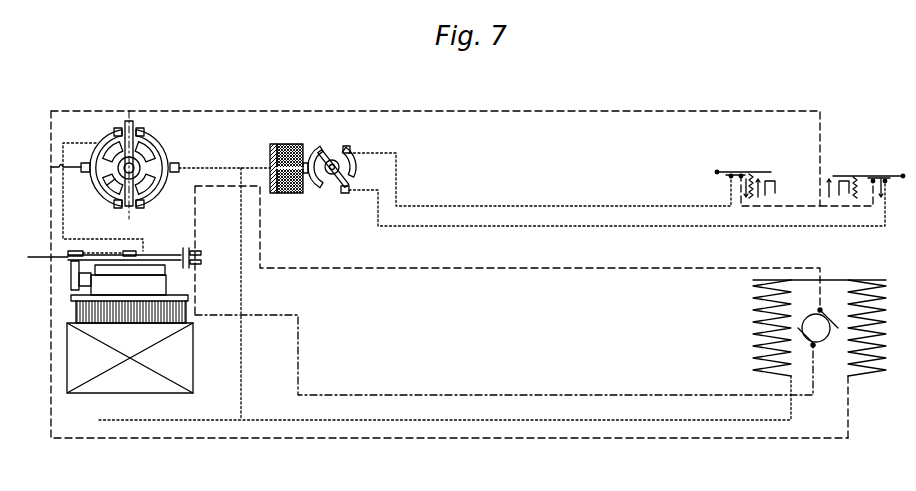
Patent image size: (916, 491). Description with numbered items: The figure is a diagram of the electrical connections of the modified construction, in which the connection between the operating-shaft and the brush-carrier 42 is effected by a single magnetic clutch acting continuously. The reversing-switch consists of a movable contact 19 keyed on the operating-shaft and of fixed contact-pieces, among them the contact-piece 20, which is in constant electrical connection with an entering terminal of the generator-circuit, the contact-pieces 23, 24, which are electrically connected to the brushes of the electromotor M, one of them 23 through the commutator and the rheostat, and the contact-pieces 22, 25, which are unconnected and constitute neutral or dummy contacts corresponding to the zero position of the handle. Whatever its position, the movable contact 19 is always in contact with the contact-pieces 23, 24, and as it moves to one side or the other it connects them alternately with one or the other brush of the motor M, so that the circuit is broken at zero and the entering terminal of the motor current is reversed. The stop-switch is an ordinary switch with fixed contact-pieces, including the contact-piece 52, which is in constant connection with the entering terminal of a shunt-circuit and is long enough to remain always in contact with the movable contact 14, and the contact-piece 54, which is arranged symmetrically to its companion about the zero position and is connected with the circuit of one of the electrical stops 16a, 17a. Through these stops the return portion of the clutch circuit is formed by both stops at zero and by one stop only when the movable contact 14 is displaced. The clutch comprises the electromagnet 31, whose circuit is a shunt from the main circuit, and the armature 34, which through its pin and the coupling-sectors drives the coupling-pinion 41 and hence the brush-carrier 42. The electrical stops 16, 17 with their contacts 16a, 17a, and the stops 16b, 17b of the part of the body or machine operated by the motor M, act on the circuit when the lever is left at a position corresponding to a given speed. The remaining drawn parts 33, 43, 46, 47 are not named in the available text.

The movable contact 14 is at (323, 153).
The electrical stop 16 is at (773, 180).
The electrical stop 16a is at (752, 168).
The stop 16b is at (805, 168).
The electrical stop 17 is at (826, 176).
The electrical stop 17a is at (865, 173).
The stop 17b is at (860, 148).
The movable contact 19 is at (131, 124).
The fixed contact-piece 20 is at (166, 158).
The fixed contact-piece 22 is at (114, 126).
The fixed contact-piece 23 is at (138, 153).
The fixed contact-piece 24 is at (106, 180).
The fixed contact-piece 25 is at (118, 202).
The electromagnet 31 is at (292, 190).
The contact 33 is at (347, 188).
The armature 34 is at (264, 160).
The coupling-pinion 41 is at (45, 260).
The brush-carrier 42 is at (150, 254).
The gear mechanism 43 is at (130, 329).
The condenser plate 46 is at (201, 248).
The condenser plate 47 is at (197, 259).
The fixed contact-piece 52 is at (318, 184).
The fixed contact-piece 54 is at (346, 144).
The electromotor M is at (819, 328).